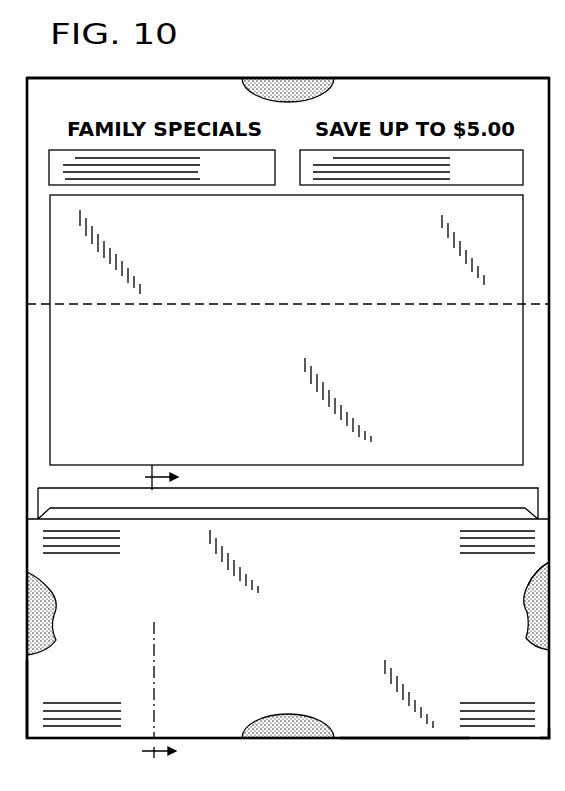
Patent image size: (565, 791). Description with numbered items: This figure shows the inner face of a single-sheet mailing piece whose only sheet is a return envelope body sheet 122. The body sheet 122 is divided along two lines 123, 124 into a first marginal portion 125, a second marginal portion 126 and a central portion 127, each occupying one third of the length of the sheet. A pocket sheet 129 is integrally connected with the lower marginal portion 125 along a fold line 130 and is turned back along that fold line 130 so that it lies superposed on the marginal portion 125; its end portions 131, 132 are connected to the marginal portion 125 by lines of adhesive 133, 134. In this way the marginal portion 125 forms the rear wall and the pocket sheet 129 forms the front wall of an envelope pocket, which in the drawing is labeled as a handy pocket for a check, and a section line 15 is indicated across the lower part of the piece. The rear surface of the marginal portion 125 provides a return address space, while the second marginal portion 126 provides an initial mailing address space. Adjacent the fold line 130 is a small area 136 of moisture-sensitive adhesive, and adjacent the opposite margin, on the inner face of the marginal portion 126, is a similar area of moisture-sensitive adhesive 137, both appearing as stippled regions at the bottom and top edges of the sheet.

The section line 15- 15 is at (148, 623).
The return envelope body sheet 122 is at (465, 75).
The line 123 is at (30, 517).
The line 124 is at (108, 312).
The first marginal portion 125 is at (532, 612).
The second marginal portion 126 is at (213, 70).
The central portion 127 is at (218, 396).
The pocket sheet 129 is at (352, 681).
The fold line 130 is at (395, 740).
The end portion 131 is at (46, 685).
The end portion 132 is at (543, 740).
The line of adhesive 133 is at (40, 629).
The line of adhesive 134 is at (531, 588).
The area of moisture-sensitive adhesive 136 is at (302, 730).
The area of moisture-sensitive adhesive 137 is at (290, 88).